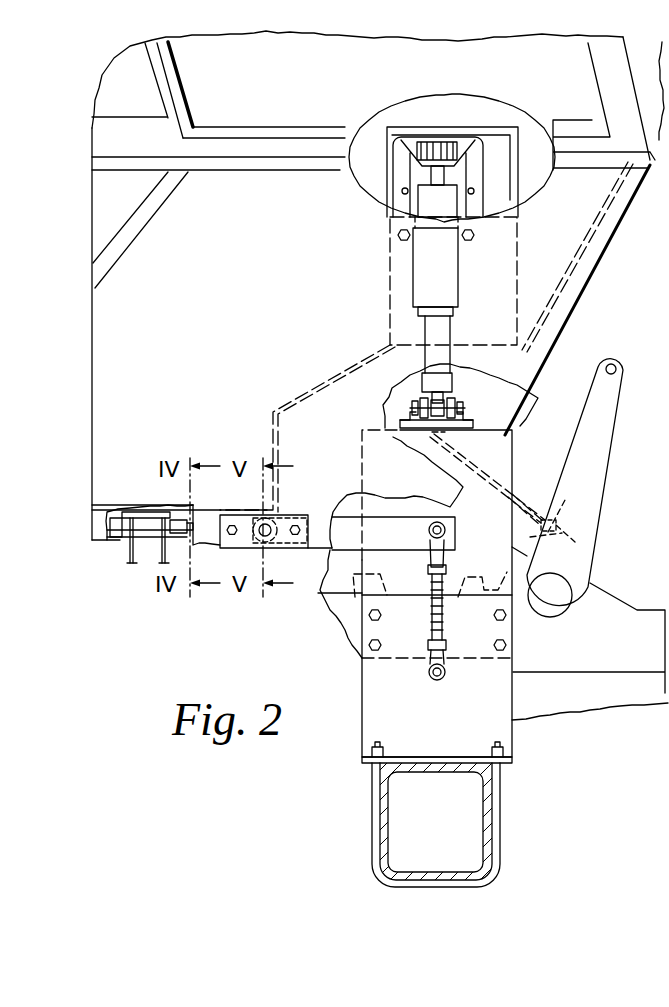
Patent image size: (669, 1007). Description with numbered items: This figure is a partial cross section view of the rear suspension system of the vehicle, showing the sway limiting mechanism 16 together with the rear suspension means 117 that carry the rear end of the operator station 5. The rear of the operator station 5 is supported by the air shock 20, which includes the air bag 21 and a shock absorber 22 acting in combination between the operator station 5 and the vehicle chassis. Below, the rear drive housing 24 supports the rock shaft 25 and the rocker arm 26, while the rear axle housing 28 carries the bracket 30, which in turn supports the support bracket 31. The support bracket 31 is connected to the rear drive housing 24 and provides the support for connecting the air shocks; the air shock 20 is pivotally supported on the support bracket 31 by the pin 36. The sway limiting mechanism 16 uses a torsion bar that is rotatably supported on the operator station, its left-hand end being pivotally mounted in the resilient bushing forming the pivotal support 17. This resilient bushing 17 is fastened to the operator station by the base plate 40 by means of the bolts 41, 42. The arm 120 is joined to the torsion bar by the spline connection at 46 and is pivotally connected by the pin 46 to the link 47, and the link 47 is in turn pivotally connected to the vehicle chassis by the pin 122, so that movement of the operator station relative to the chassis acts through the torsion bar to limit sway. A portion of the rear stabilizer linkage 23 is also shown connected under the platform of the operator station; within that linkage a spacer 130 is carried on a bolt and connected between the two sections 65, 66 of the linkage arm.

The operator station 5 is at (597, 270).
The sway limiting mechanism 16 is at (346, 479).
The pivotal support (resilient bushing) 17 is at (282, 543).
The air shock 20 is at (416, 203).
The air bag 21 is at (456, 273).
The shock absorber 22 is at (450, 328).
The rear stabilizer linkage 23 is at (131, 575).
The rear drive housing 24 is at (605, 587).
The rock shaft 25 is at (556, 604).
The rocker arm 26 is at (598, 476).
The rear axle housing 28 is at (490, 815).
The bracket 30 is at (364, 675).
The support bracket 31 is at (498, 426).
The pin 36 is at (462, 410).
The base plate 40 is at (300, 517).
The bolt 41 is at (307, 538).
The bolt 42 is at (233, 541).
The pin (spline connection) 46 is at (448, 528).
The link 47 is at (430, 625).
The section of arm 65 is at (134, 564).
The section of arm 66 is at (160, 552).
The rear suspension means 117 is at (348, 301).
The arm 120 is at (372, 527).
The pin 122 is at (430, 679).
The spacer 130 is at (148, 522).